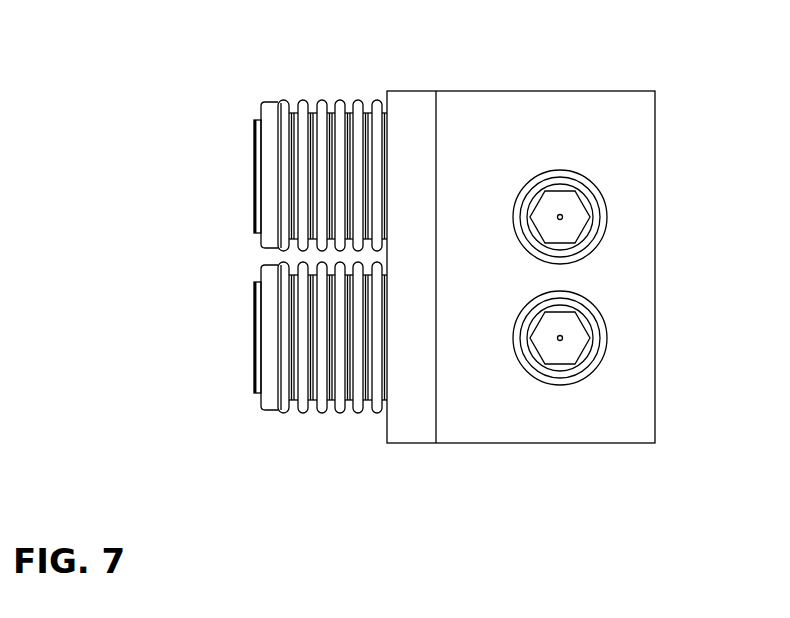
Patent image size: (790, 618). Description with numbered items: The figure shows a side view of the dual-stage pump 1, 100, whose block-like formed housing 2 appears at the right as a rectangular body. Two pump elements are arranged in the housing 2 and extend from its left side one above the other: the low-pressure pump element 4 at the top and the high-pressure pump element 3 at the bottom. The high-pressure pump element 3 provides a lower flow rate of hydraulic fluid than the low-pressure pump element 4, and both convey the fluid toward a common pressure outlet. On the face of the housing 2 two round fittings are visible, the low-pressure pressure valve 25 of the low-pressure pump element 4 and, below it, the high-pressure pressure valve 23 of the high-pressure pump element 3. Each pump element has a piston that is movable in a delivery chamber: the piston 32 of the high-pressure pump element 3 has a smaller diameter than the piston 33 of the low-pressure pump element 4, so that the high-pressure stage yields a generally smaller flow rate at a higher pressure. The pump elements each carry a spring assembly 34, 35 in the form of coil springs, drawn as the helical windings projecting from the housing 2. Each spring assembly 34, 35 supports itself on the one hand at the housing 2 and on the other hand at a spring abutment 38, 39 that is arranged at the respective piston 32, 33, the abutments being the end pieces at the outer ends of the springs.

The dual-stage pump 1 is at (387, 255).
The dual-stage pump 100 is at (448, 255).
The housing 2 is at (557, 239).
The high-pressure pump element 3 is at (278, 374).
The low-pressure pump element 4 is at (281, 137).
The high-pressure pressure valve 23 is at (572, 328).
The low-pressure pressure valve 25 is at (570, 202).
The piston 32 is at (253, 332).
The piston 33 is at (255, 178).
The spring assembly 34 is at (332, 408).
The spring assembly 35 is at (307, 117).
The spring abutment 38 is at (270, 402).
The spring abutment 39 is at (270, 117).